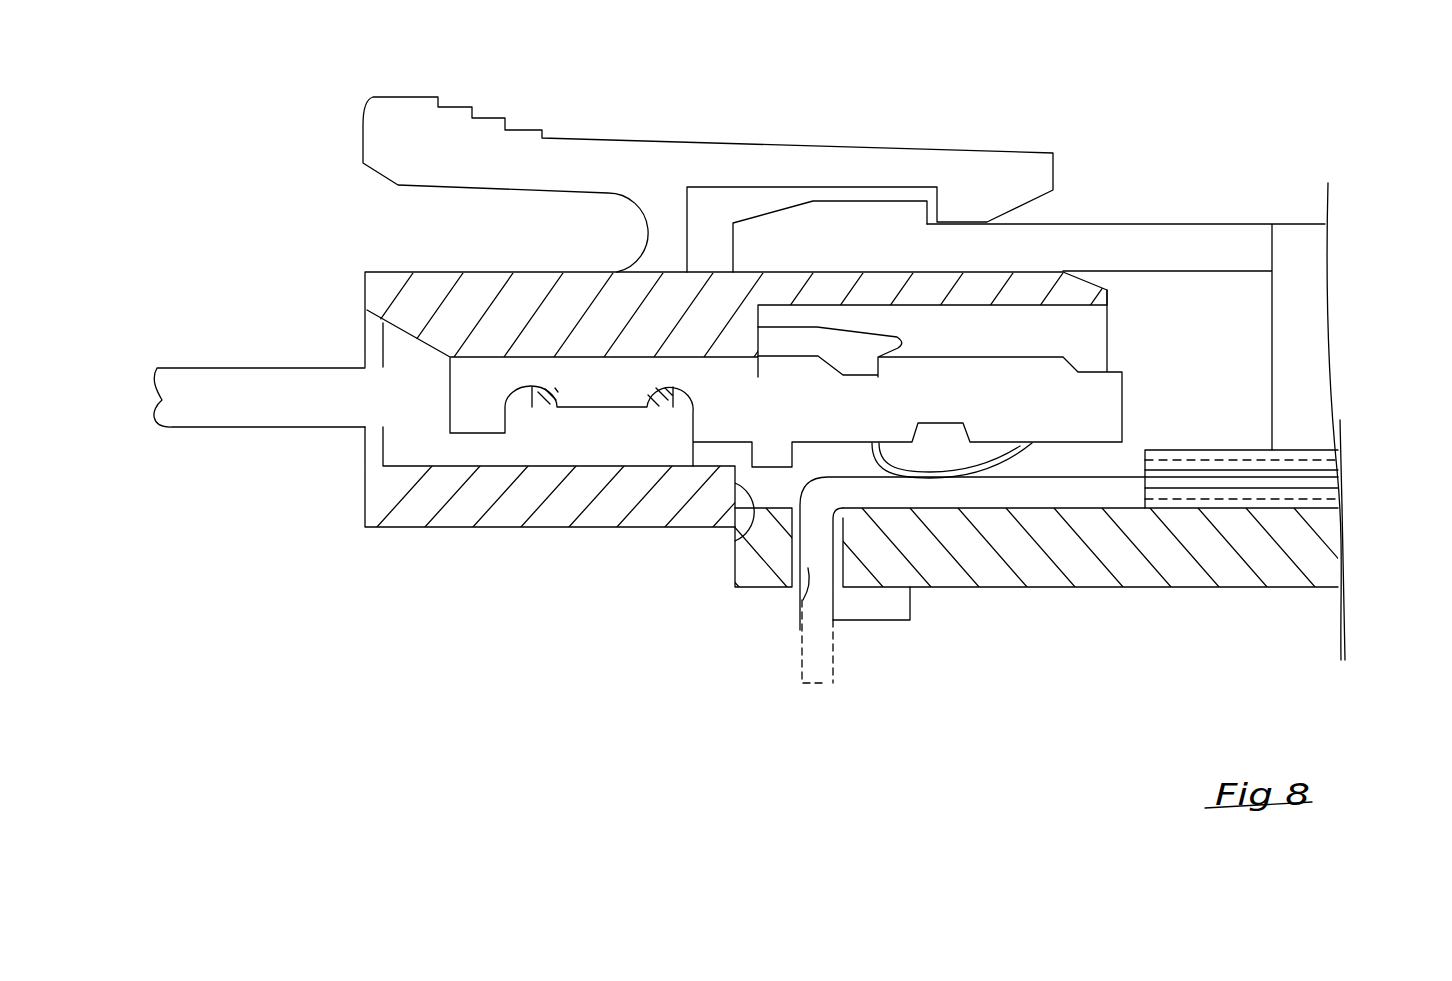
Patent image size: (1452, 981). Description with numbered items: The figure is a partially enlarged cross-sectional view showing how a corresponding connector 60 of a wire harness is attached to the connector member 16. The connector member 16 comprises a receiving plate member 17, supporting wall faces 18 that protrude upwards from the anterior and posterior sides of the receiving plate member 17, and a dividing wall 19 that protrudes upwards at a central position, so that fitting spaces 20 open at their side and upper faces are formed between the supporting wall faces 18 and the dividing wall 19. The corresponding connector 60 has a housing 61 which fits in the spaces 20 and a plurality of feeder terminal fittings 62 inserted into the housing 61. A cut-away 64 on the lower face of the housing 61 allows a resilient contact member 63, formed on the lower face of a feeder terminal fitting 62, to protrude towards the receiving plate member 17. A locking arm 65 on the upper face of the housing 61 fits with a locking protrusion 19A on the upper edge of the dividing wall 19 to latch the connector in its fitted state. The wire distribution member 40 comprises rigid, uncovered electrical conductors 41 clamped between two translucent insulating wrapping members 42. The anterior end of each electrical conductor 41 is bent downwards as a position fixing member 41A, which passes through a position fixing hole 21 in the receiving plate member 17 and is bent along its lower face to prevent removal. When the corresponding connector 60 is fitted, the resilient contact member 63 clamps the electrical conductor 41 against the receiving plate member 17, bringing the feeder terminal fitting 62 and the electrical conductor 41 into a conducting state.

The connector member 16 is at (1277, 127).
The receiving plate member 17 is at (1137, 568).
The supporting wall faces 18 is at (1302, 268).
The dividing wall 19 is at (1177, 297).
The locking protrusion 19A is at (893, 230).
The fitting spaces 20 is at (1112, 478).
The position fixing holes 21 is at (803, 600).
The wire distribution member 40 is at (1325, 410).
The electrical conductors 41 is at (1025, 490).
The position fixing members 41A is at (822, 672).
The wrapping members 42 is at (1212, 463).
The corresponding connector 60 is at (303, 305).
The housing 61 is at (558, 307).
The feeder terminal fitting 62 is at (1018, 388).
The resilient contact member 63 is at (977, 465).
The cut-away 64 is at (737, 540).
The locking arm 65 is at (743, 163).